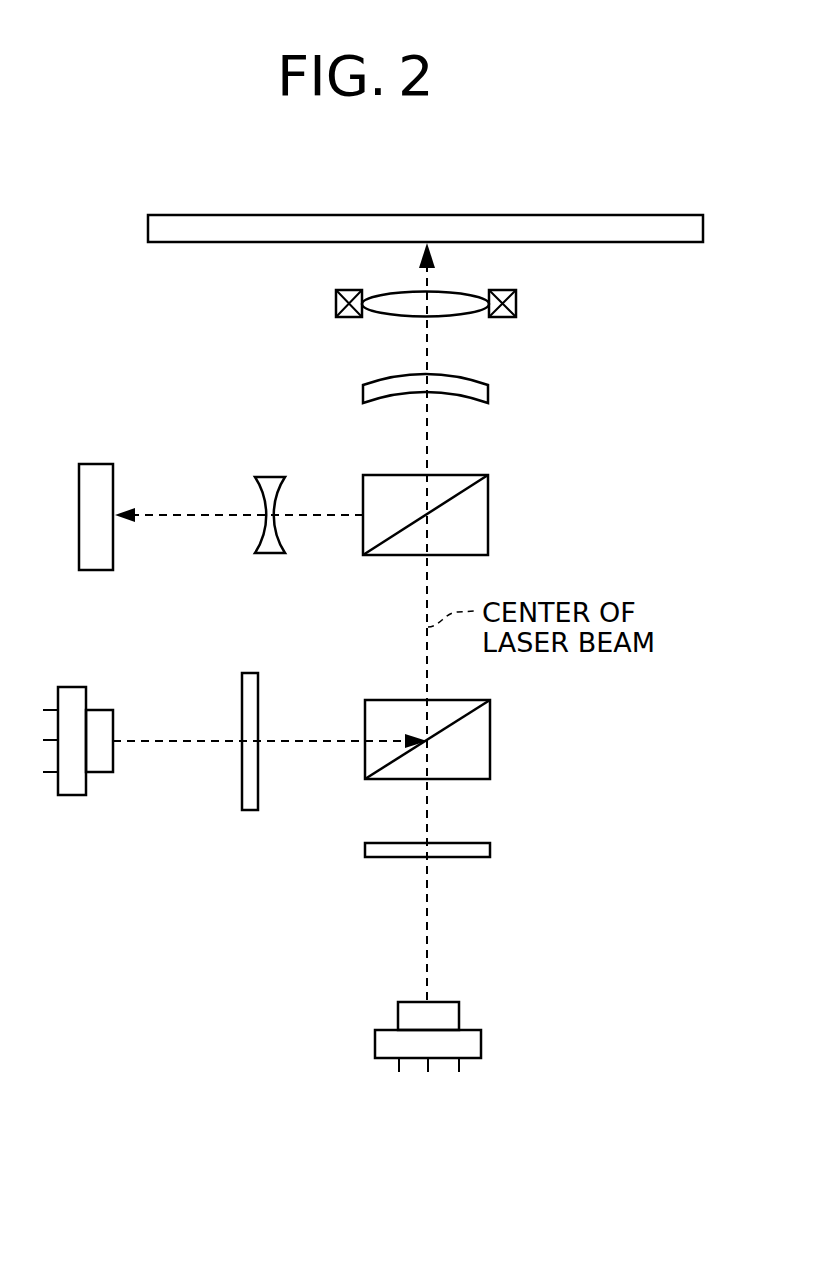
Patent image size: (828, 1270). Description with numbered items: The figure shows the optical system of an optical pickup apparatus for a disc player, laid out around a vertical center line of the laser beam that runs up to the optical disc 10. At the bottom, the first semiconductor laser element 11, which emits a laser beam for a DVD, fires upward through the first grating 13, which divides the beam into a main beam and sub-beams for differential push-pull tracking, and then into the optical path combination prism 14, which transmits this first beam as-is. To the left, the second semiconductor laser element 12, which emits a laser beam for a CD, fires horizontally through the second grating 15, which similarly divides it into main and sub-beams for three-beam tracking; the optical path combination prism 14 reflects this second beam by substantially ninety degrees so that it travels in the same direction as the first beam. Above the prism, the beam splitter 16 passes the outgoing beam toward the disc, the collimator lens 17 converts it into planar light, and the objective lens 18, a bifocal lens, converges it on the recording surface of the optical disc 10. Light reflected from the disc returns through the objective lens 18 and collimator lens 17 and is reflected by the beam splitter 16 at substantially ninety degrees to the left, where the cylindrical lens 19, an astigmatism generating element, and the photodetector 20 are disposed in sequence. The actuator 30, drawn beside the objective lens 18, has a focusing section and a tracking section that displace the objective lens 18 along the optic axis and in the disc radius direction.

The optical disc 10 is at (652, 215).
The first semiconductor laser element 11 is at (483, 1042).
The second semiconductor laser element 12 is at (72, 687).
The first grating 13 is at (364, 850).
The optical path combination prism 14 is at (492, 731).
The second grating 15 is at (248, 673).
The beam splitter 16 is at (490, 523).
The collimator lens 17 is at (490, 394).
The objective lens 18 is at (405, 318).
The cylindrical lens 19 is at (270, 477).
The photodetector 20 is at (100, 464).
The actuator 30 is at (336, 300).